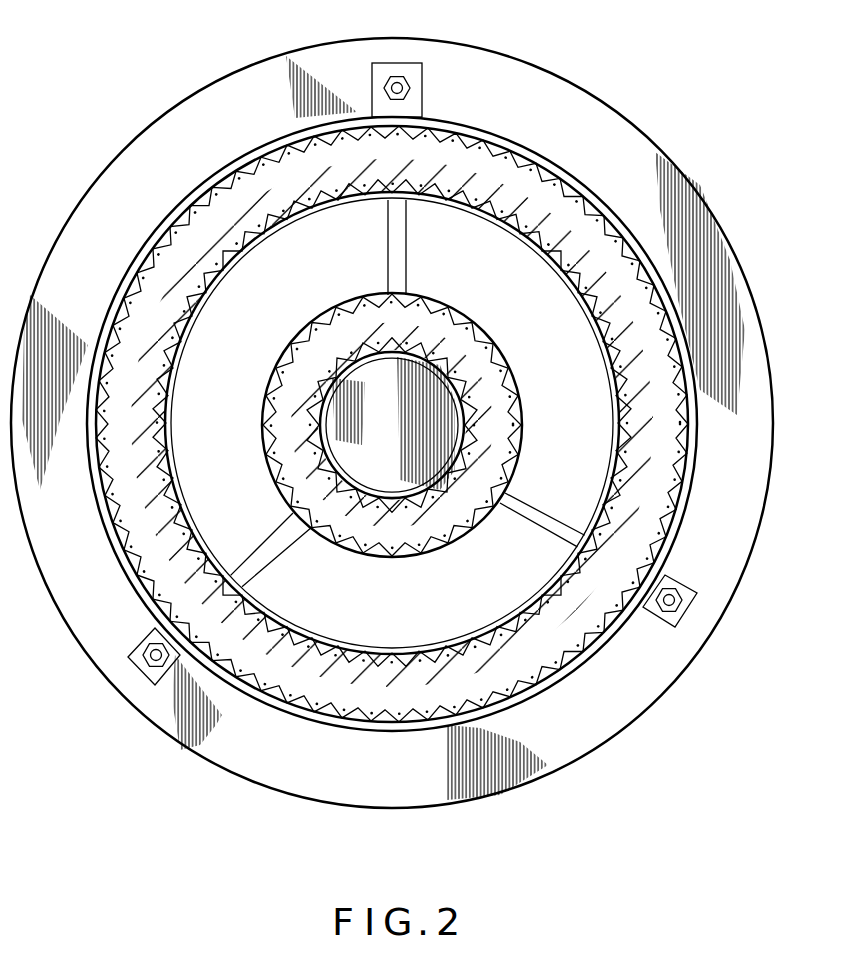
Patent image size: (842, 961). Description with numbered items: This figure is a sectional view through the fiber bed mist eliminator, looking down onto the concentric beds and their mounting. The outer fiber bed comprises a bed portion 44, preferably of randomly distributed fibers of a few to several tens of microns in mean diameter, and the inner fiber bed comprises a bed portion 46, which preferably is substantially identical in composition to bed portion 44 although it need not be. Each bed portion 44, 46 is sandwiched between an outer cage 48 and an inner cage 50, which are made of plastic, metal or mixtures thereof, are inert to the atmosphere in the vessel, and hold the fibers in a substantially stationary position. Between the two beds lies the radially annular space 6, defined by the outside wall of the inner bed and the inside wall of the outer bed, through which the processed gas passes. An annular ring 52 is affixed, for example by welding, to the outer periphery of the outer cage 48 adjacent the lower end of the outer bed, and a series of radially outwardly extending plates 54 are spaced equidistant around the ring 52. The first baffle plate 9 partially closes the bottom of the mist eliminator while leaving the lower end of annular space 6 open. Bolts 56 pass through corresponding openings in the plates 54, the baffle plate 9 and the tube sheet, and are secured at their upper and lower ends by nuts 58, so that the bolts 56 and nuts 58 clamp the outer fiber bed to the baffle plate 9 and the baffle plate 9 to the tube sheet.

The radially annular space 6 is at (416, 612).
The first baffle plate 9 is at (600, 132).
The bed portion 44 is at (524, 222).
The bed portion 46 is at (493, 367).
The outer cage 48 is at (132, 290).
The inner cage 50 is at (253, 238).
The annular ring 52 is at (93, 436).
The radially outwardly extending plate 54 is at (410, 67).
The bolt 56 is at (384, 86).
The nut 58 is at (410, 88).